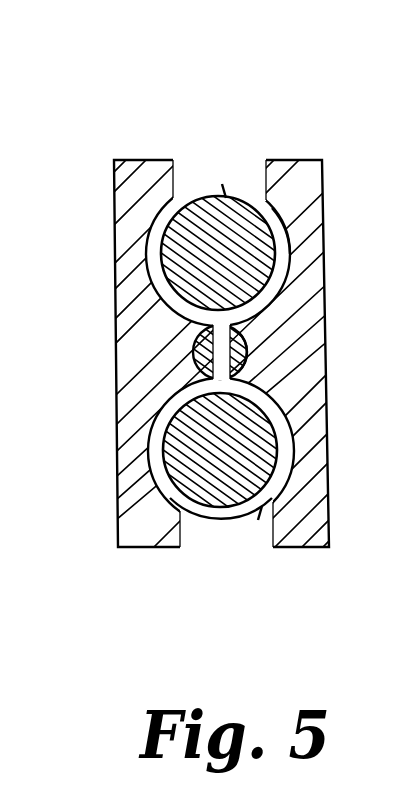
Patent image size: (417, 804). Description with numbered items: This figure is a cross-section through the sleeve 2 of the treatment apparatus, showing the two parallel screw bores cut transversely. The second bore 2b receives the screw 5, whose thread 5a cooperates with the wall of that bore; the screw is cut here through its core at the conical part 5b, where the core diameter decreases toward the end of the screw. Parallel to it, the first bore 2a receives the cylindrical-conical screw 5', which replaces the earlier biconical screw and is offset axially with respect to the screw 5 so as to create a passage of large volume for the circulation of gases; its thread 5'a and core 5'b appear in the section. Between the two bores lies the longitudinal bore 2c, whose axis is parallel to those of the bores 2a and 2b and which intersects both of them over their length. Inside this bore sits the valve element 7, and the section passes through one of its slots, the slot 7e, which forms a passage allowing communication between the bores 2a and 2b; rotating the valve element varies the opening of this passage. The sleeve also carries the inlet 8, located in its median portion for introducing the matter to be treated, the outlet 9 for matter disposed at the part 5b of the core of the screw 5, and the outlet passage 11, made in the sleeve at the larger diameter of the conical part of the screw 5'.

The sleeve 2 is at (313, 182).
The first bore 2a is at (267, 405).
The second bore 2b is at (279, 237).
The longitudinal bore 2c is at (252, 348).
The screw 5 is at (215, 187).
The thread of screw 5a is at (224, 191).
The conical core part of screw 5b is at (258, 252).
The cylindrical-conical screw 5' is at (221, 589).
The slit of lower sleeve 5'a is at (304, 593).
The lower tube 5'b is at (275, 449).
The valve element 7 is at (242, 331).
The slot of valve element 7e is at (219, 359).
The inlet 8 is at (411, 451).
The outlet 9 is at (202, 175).
The outlet passage 11 is at (233, 529).